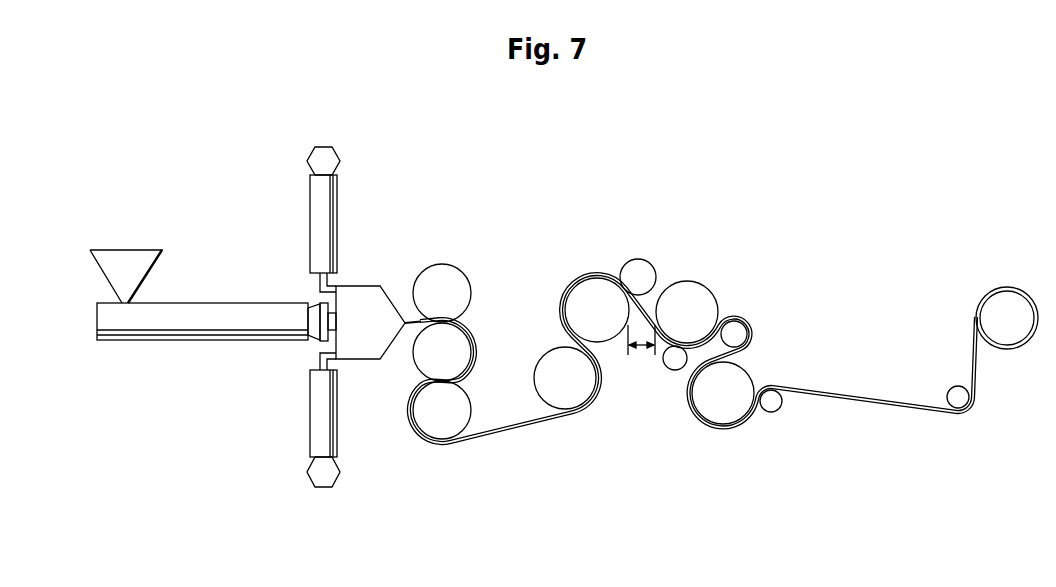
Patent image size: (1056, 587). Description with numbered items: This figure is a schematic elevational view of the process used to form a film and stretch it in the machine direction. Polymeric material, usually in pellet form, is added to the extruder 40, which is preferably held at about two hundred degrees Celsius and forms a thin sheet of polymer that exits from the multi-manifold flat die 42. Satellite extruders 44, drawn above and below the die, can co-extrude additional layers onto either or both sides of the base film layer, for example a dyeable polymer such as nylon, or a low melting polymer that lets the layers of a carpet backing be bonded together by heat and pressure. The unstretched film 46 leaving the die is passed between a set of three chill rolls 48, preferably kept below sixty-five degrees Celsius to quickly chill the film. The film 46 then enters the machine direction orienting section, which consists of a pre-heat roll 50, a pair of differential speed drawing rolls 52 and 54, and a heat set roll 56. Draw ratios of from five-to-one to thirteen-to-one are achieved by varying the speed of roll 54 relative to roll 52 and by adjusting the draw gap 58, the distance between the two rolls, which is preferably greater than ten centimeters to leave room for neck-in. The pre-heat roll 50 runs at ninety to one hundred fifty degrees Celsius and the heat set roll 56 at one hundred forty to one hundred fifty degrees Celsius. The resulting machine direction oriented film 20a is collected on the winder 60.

The extruder 40 is at (227, 312).
The multi-manifold flat die 42 is at (345, 323).
The satellite extruders 44 is at (320, 223).
The unstretched film 46 is at (414, 327).
The chill rolls 48 is at (429, 304).
The pre-heat roll 50 is at (552, 389).
The differential speed drawing roll 52 is at (584, 321).
The differential speed drawing roll 54 is at (674, 323).
The heat set roll 56 is at (710, 404).
The draw gap 58 is at (641, 352).
The winder 60 is at (994, 329).
The machine direction oriented film 20a is at (842, 400).